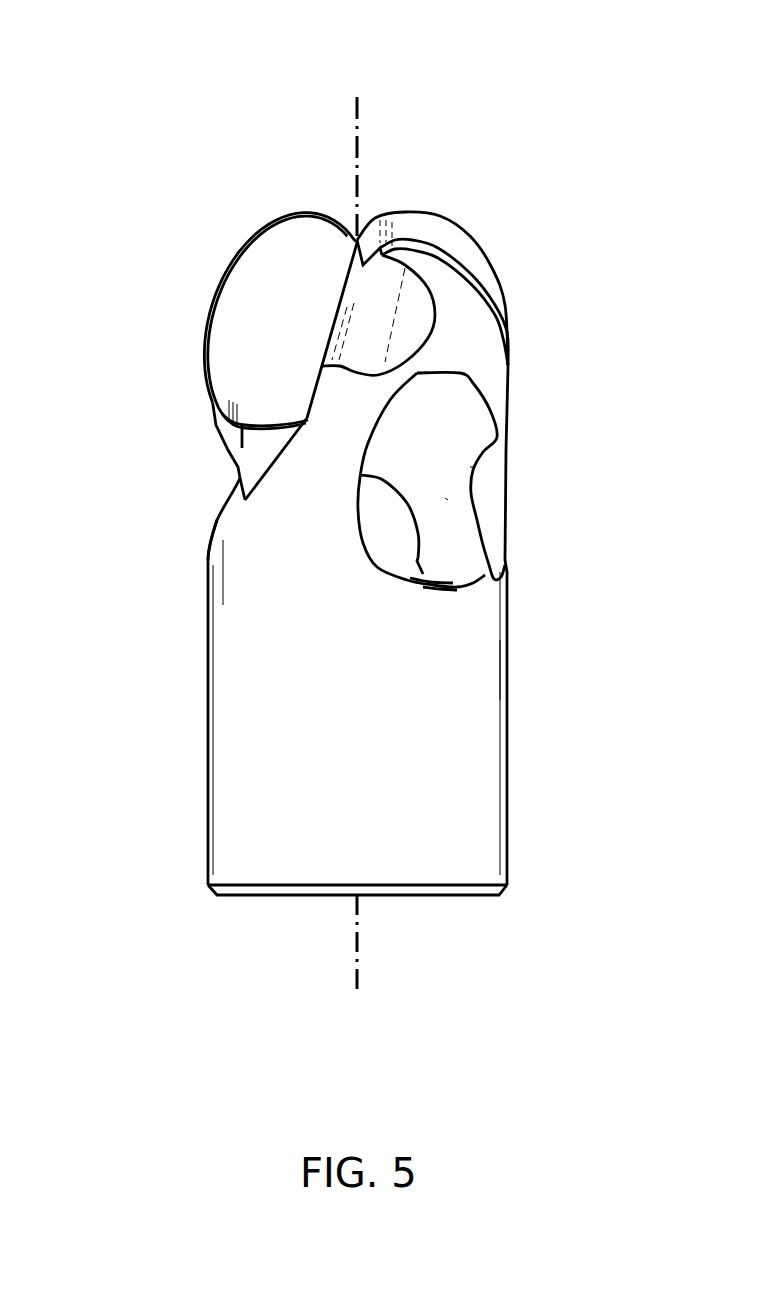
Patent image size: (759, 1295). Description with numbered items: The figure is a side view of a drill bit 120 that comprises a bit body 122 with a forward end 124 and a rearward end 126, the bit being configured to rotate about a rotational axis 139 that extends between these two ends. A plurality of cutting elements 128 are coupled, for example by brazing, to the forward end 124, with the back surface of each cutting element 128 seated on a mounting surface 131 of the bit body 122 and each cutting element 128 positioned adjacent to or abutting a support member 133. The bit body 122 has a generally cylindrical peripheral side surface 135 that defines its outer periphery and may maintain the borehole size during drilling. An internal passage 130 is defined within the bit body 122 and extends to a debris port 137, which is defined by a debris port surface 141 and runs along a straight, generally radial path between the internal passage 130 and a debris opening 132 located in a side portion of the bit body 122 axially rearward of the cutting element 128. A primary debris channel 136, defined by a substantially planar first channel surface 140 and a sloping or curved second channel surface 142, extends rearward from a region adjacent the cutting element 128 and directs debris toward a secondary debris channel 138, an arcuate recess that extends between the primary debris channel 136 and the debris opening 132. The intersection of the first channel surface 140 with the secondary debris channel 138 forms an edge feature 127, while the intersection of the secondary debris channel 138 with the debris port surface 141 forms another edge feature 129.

The drill bit 120 is at (165, 122).
The bit body 122 is at (207, 660).
The forward end 124 is at (382, 195).
The rearward end 126 is at (280, 920).
The edge feature 127 is at (238, 466).
The cutting element 128 is at (262, 233).
The edge feature 129 is at (485, 560).
The internal passage 130 is at (390, 542).
The mounting surface 131 is at (207, 393).
The debris opening 132 is at (476, 585).
The support member 133 is at (253, 440).
The peripheral side surface 135 is at (433, 645).
The primary debris channel 136 is at (262, 435).
The debris port 137 is at (455, 497).
The secondary debris channel 138 is at (238, 442).
The rotational axis 139 is at (358, 947).
The first channel surface 140 is at (233, 478).
The debris port surface 141 is at (473, 410).
The second channel surface 142 is at (258, 487).